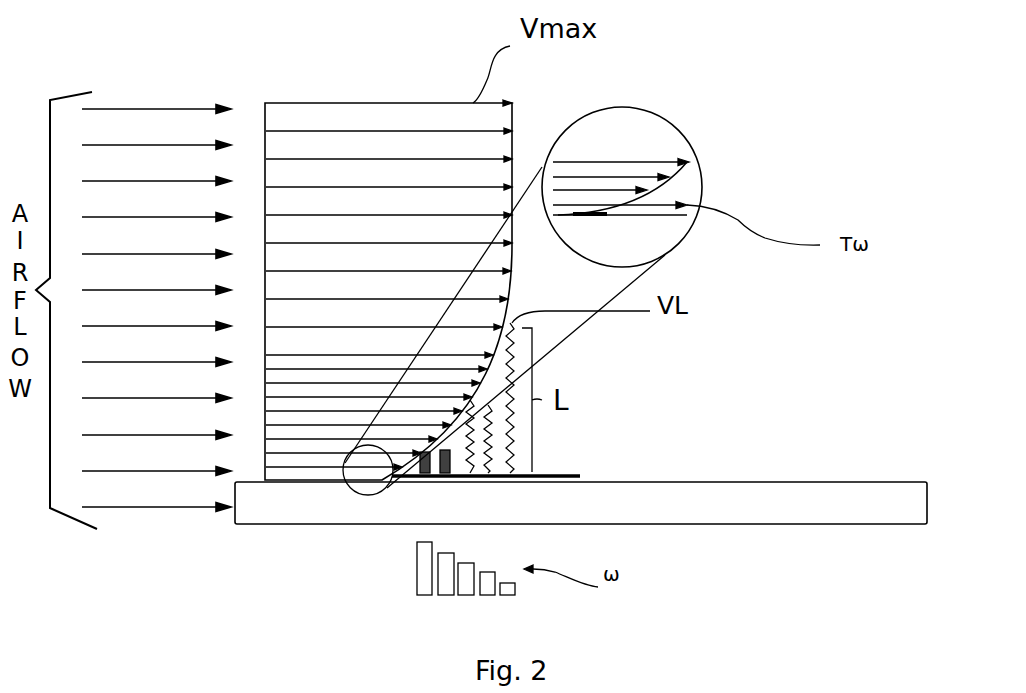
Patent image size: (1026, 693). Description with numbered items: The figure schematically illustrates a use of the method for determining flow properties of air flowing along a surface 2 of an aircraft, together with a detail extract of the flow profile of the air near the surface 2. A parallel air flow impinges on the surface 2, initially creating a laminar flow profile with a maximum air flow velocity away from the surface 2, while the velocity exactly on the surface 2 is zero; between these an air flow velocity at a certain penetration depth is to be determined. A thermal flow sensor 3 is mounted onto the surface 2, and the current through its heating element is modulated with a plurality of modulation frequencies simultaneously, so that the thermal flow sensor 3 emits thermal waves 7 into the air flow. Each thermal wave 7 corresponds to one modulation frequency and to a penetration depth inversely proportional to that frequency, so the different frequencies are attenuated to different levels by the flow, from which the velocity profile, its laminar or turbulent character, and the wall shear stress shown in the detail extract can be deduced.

The surface 2 is at (822, 498).
The thermal flow sensor 3 is at (580, 476).
The thermal waves 7 is at (513, 452).